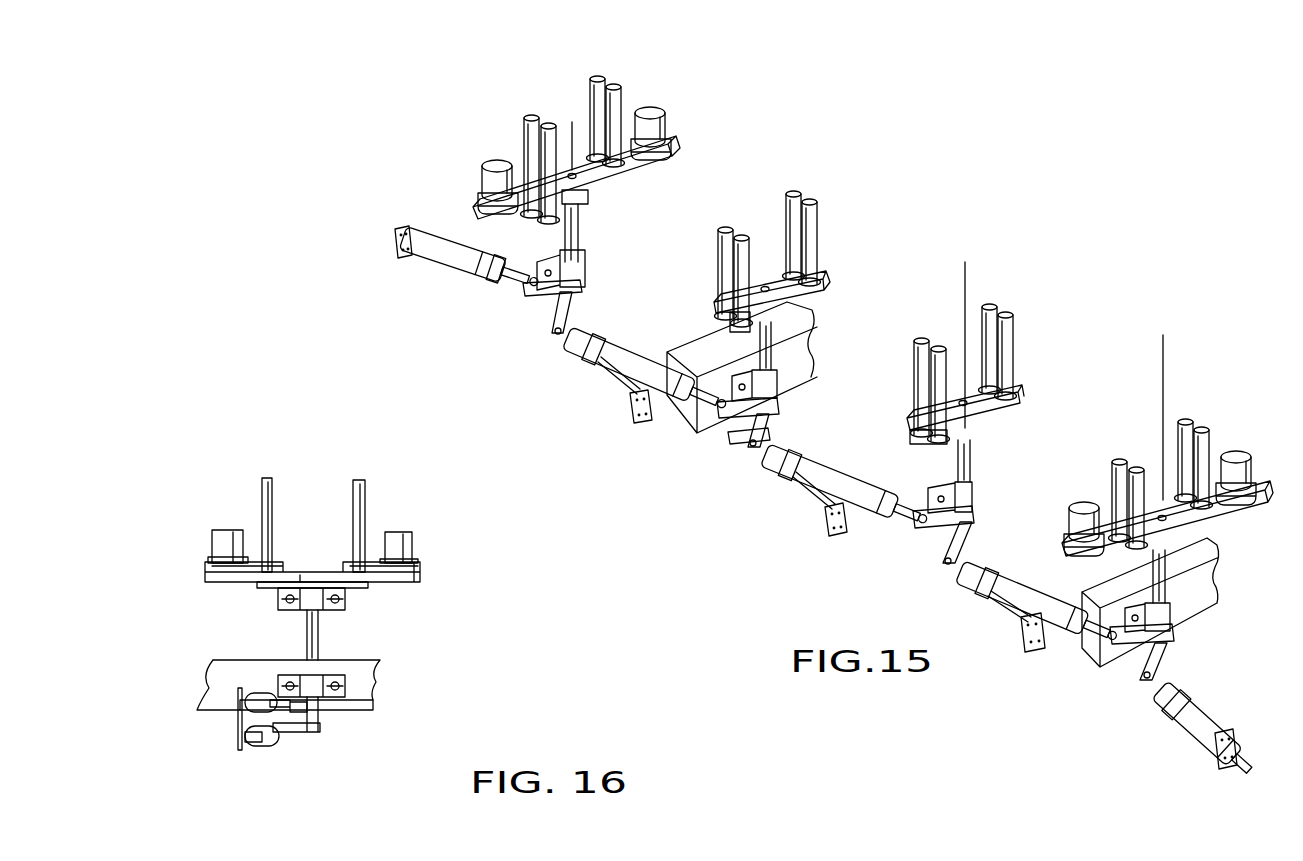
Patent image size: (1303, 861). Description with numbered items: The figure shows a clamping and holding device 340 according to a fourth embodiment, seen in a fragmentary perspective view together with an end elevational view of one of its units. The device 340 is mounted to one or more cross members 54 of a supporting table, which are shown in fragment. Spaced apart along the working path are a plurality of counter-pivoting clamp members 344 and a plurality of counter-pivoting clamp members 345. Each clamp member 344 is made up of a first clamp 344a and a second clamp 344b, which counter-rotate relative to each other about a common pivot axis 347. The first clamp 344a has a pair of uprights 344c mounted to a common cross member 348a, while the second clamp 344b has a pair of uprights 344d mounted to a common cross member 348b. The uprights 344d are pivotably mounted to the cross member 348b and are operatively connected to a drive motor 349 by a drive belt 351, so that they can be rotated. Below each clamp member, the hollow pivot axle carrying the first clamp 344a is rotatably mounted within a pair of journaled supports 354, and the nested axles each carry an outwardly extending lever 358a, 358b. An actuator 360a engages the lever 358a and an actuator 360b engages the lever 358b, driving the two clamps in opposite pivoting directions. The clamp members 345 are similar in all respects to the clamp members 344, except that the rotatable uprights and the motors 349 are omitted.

In FIG. 15, the clamping and holding device 340 is at (976, 236).
In FIG. 16, the clamping and holding device 340 is at (147, 554).
In FIG. 15, the counter-pivoting clamp members 344 is at (624, 100).
In FIG. 15, the first clamp 344a is at (572, 208).
In FIG. 16, the first clamp 344a is at (262, 590).
In FIG. 15, the second clamp 344b is at (492, 200).
In FIG. 16, the second clamp 344b is at (318, 573).
In FIG. 15, the uprights 344c is at (600, 95).
In FIG. 16, the uprights 344c is at (262, 497).
In FIG. 15, the uprights 344d is at (528, 117).
In FIG. 16, the uprights 344d is at (367, 496).
In FIG. 15, the counter-pivoting clamp members 345 is at (816, 218).
In FIG. 16, the counter-pivoting clamp members 345 is at (370, 592).
In FIG. 15, the common pivot axis 347 is at (573, 122).
In FIG. 15, the cross member 348a is at (585, 200).
In FIG. 16, the cross member 348a is at (262, 606).
In FIG. 15, the cross member 348b is at (562, 168).
In FIG. 16, the cross member 348b is at (303, 573).
In FIG. 15, the drive motor 349 is at (655, 147).
In FIG. 16, the drive motor 349 is at (213, 540).
In FIG. 15, the drive belt 351 is at (638, 157).
In FIG. 16, the drive belt 351 is at (237, 568).
In FIG. 16, the journaled supports 354 is at (345, 614).
In FIG. 15, the lever 358a is at (738, 430).
In FIG. 16, the lever 358a is at (374, 703).
In FIG. 15, the lever 358b is at (768, 438).
In FIG. 16, the lever 358b is at (300, 735).
In FIG. 15, the actuator 360a is at (443, 263).
In FIG. 16, the actuator 360a is at (237, 712).
In FIG. 15, the actuator 360b is at (580, 358).
In FIG. 16, the actuator 360b is at (258, 745).
In FIG. 16, the cross members 54 is at (362, 710).